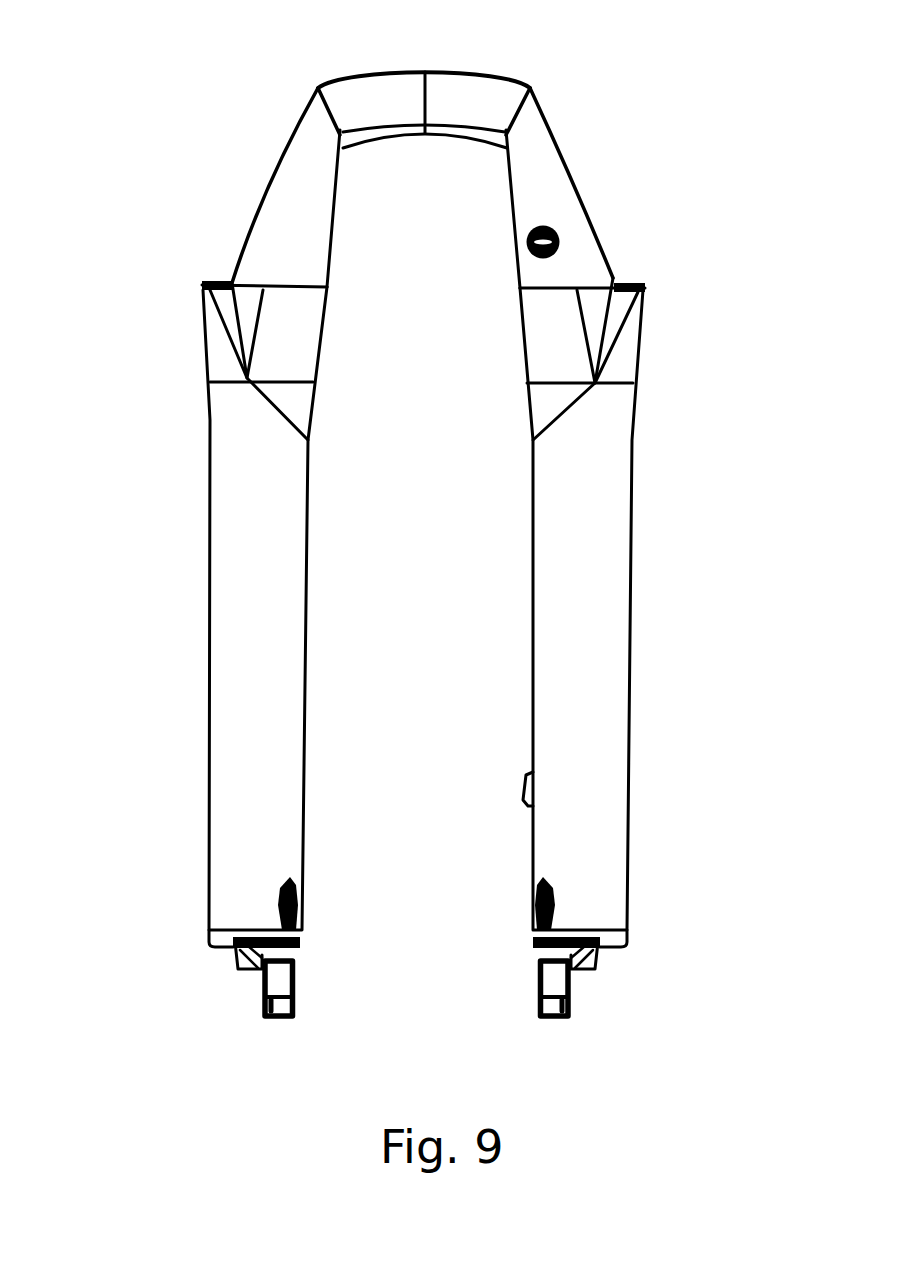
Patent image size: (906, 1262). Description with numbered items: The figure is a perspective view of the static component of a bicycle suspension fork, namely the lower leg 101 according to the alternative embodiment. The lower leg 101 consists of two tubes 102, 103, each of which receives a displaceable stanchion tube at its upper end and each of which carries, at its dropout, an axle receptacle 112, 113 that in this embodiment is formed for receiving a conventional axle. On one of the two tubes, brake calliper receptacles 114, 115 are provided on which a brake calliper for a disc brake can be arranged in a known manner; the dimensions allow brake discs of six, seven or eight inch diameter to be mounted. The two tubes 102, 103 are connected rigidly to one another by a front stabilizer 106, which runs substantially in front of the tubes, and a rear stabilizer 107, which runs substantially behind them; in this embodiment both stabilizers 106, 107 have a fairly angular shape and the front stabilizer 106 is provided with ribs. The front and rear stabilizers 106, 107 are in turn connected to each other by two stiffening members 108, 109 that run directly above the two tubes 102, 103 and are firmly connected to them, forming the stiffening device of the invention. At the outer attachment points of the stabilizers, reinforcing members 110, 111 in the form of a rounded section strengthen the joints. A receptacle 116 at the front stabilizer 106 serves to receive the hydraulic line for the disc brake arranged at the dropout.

The lower leg 101 is at (156, 501).
The tube 102 is at (238, 637).
The tube 103 is at (598, 650).
The front stabilizer 106 is at (405, 103).
The rear stabilizer 107 is at (370, 137).
The stiffening member 108 is at (327, 280).
The stiffening member 109 is at (518, 273).
The reinforcing member 110 is at (228, 276).
The reinforcing member 111 is at (613, 285).
The axle receptacle 112 is at (262, 985).
The axle receptacle 113 is at (568, 985).
The brake calliper receptacle 114 is at (533, 775).
The brake calliper receptacle 115 is at (525, 977).
The receptacle for adjusting device 116 is at (527, 238).